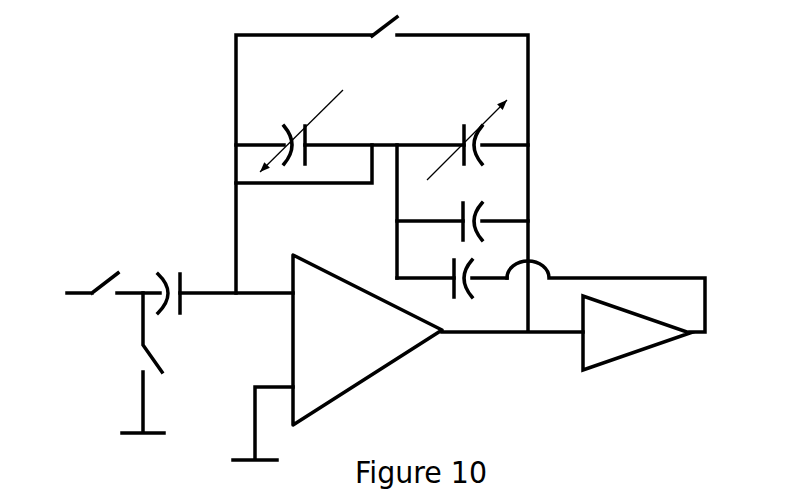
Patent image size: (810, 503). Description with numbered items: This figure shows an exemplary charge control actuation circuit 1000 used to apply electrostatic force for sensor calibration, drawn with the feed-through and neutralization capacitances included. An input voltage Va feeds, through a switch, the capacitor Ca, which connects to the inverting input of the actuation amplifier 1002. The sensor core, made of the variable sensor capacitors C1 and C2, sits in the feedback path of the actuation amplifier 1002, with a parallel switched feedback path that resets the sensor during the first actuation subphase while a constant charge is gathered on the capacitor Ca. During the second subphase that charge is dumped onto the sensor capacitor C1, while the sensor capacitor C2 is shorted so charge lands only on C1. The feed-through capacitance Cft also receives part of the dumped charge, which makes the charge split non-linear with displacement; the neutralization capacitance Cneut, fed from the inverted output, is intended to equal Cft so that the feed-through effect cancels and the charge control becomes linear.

The charge control actuation circuit 1000 is at (389, 238).
The actuation amplifier 1002 is at (413, 377).
The sensor capacitor C1 is at (467, 135).
The sensor capacitor C2 is at (301, 131).
The feed-through capacitance Cft is at (478, 208).
The neutralization capacitance Cneut is at (436, 273).
The capacitor Ca is at (180, 279).